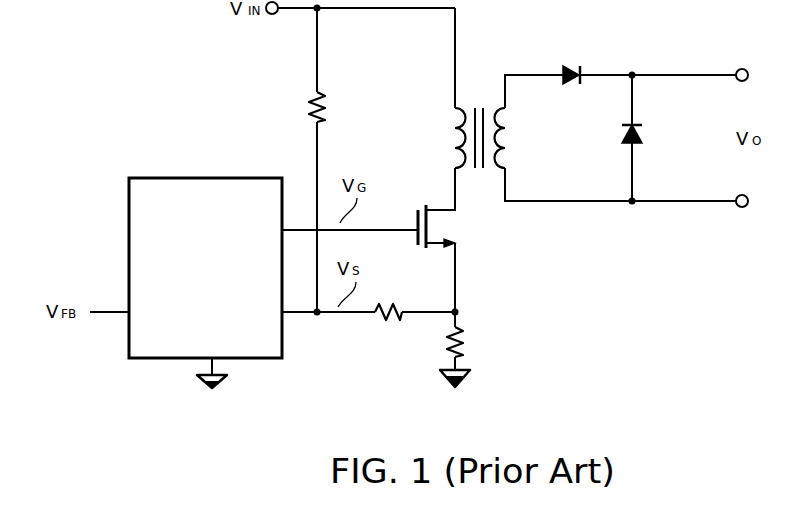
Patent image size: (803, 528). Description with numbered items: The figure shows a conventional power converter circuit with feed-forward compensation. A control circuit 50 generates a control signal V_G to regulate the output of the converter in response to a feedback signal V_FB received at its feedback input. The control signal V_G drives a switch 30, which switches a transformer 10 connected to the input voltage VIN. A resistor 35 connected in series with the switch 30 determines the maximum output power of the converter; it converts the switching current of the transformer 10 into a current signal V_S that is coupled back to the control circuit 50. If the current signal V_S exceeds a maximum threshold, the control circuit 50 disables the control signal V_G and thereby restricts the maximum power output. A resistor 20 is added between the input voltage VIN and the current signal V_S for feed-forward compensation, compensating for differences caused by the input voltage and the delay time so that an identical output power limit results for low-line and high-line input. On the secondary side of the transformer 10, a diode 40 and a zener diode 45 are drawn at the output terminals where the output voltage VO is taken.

The transformer 10 is at (478, 95).
The resistor 20 is at (330, 108).
The switch 30 is at (455, 228).
The resistor 35 is at (469, 342).
The rectifier diode 40 is at (571, 62).
The zener diode 45 is at (648, 138).
The control circuit 50 is at (123, 200).